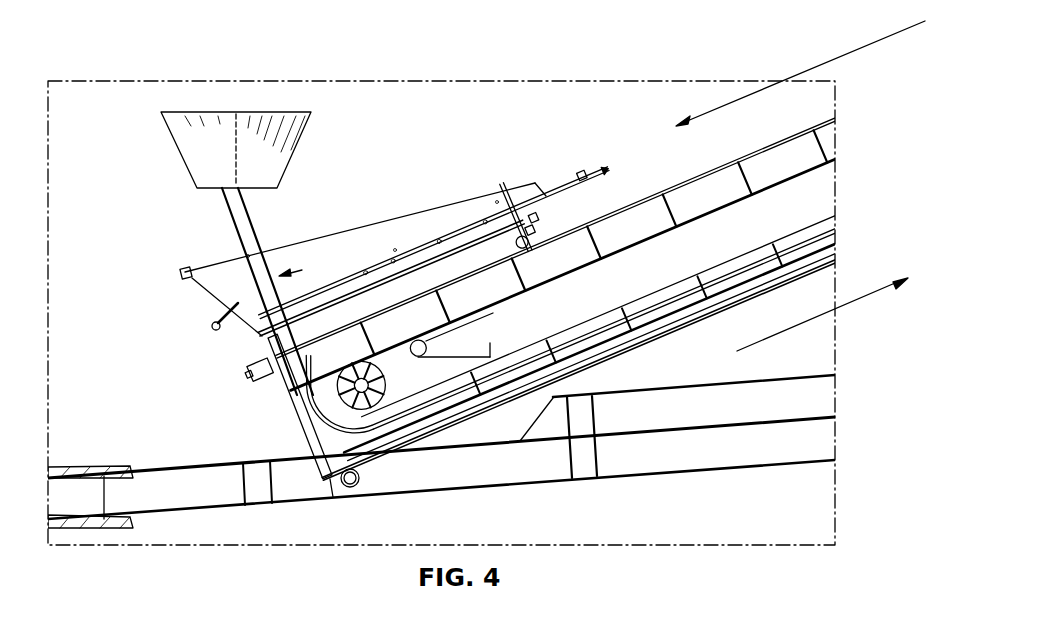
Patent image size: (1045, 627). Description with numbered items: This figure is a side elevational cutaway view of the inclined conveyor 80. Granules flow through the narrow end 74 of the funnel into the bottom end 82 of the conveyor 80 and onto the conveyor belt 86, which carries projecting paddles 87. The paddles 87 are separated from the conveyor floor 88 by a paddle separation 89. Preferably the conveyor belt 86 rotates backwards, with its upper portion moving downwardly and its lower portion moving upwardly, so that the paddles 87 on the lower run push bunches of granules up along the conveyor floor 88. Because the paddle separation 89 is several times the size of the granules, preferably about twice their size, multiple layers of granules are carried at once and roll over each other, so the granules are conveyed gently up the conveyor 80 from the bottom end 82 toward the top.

The narrow end 74 is at (294, 146).
The conveyor 80 is at (667, 197).
The bottom end 82 is at (250, 372).
The conveyor belt 86 is at (620, 250).
The projecting paddles 87 is at (530, 268).
The conveyor floor 88 is at (662, 340).
The paddle separation 89 is at (745, 300).